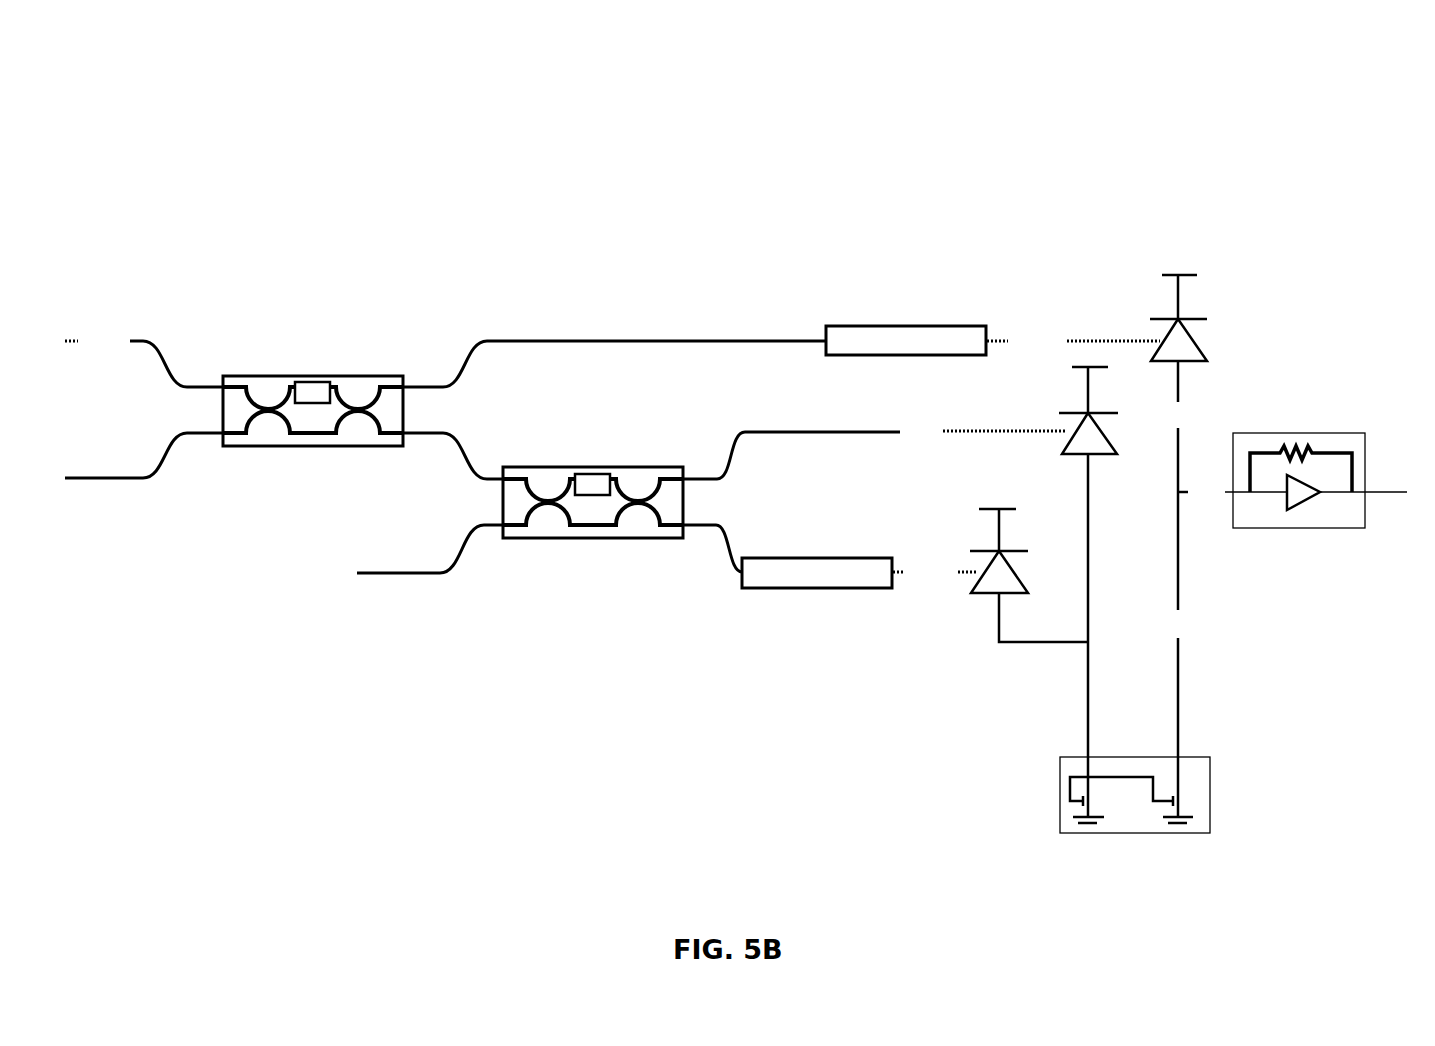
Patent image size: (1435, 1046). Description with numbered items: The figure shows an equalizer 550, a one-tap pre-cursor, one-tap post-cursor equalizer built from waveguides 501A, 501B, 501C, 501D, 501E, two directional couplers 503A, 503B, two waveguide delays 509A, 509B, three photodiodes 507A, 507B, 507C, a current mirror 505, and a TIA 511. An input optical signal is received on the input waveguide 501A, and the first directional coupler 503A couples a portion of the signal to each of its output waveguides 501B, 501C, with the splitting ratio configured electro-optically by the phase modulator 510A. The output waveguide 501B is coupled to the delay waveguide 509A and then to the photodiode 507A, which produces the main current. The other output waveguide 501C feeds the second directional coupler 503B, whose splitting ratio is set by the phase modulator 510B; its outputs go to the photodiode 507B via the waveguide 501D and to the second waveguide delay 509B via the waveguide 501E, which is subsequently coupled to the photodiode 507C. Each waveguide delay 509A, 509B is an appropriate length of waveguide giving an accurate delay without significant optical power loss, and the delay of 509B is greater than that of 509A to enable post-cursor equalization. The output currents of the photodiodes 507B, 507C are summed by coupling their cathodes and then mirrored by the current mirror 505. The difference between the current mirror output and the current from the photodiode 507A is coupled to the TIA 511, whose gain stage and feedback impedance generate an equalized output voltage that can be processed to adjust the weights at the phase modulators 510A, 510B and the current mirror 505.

The equalizer 550 is at (300, 122).
The input waveguide 501A is at (138, 340).
The output waveguide 501B is at (782, 340).
The output waveguide 501C is at (458, 442).
The waveguide 501D is at (745, 432).
The waveguide 501E is at (725, 532).
The first directional coupler 503A is at (372, 376).
The second directional coupler 503B is at (650, 467).
The phase modulator 510A is at (307, 383).
The phase modulator 510B is at (587, 474).
The waveguide delay 509A is at (877, 325).
The waveguide delay 509B is at (792, 558).
The photodiode 507A is at (1205, 347).
The photodiode 507B is at (1108, 457).
The photodiode 507C is at (985, 550).
The current mirror 505 is at (1130, 833).
The TIA 511 is at (1303, 433).